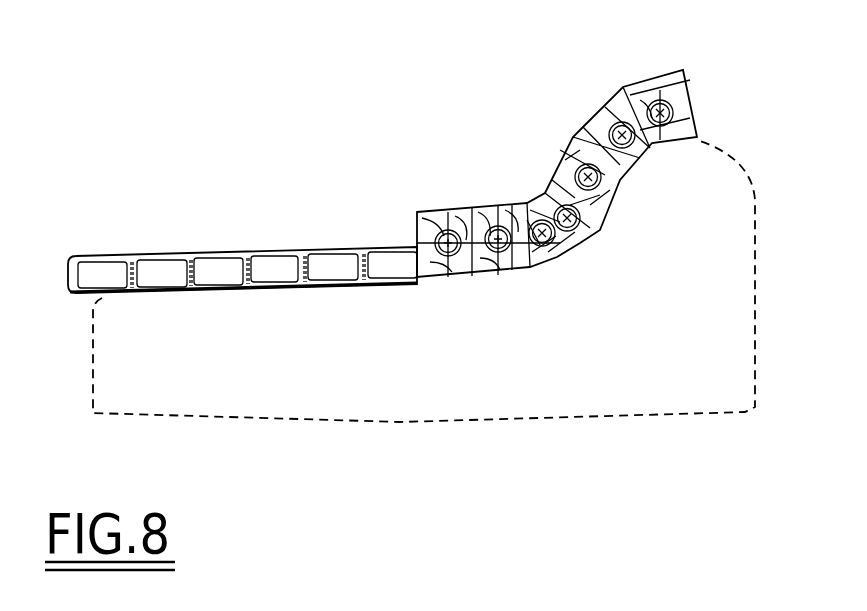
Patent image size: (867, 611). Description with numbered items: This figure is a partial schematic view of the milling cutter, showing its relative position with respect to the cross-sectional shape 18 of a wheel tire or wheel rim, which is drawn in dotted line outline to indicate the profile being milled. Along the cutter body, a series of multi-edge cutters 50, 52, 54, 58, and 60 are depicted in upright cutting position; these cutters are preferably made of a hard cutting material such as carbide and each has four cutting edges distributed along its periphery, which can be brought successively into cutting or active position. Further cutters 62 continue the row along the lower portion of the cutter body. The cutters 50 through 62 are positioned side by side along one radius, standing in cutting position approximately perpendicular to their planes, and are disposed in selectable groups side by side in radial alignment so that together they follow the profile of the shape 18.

The cross-sectional shape of a wheel tire or wheel rim 18 is at (743, 324).
The multi-edge cutter 50 is at (652, 83).
The multi-edge cutter 52 is at (605, 107).
The multi-edge cutter 54 is at (560, 163).
The multi-edge cutter 58 is at (543, 258).
The multi-edge cutter 60 is at (450, 277).
The cutter 62 is at (93, 297).